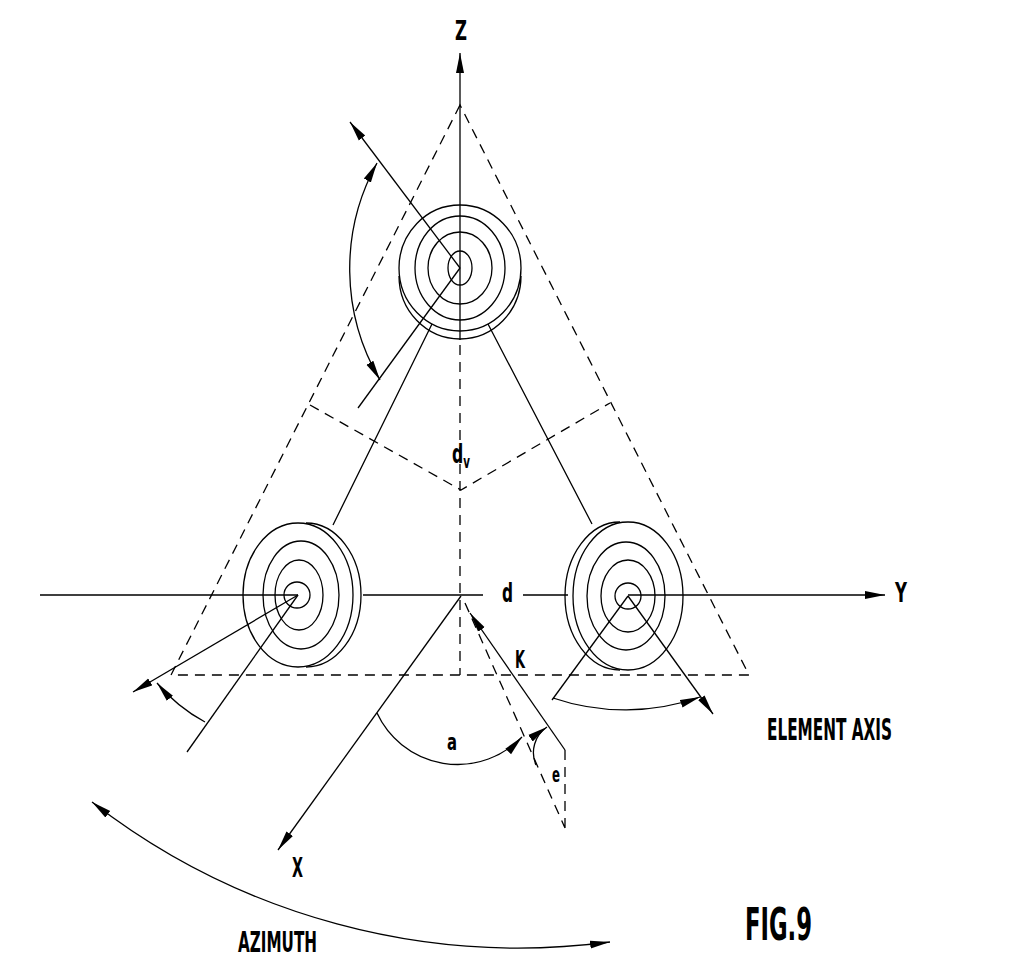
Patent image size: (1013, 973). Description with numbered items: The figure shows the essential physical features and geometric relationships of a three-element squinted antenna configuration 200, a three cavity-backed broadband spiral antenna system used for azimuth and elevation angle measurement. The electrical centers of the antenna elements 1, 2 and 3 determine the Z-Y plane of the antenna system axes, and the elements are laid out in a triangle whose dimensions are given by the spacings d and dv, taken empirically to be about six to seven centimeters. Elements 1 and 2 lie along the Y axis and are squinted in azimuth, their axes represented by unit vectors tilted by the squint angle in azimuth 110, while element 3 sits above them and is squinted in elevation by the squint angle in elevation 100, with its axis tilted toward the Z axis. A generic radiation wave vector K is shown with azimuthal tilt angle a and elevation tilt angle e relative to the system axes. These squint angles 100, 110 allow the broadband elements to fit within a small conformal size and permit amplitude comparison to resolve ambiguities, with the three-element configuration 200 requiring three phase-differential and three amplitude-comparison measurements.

The antenna element 1 is at (302, 595).
The antenna element 2 is at (624, 596).
The antenna element 3 is at (460, 272).
The squint angle in elevation 100 is at (347, 253).
The squint angle in azimuth 110 is at (430, 715).
The three-element squinted antenna configuration 200 is at (205, 442).